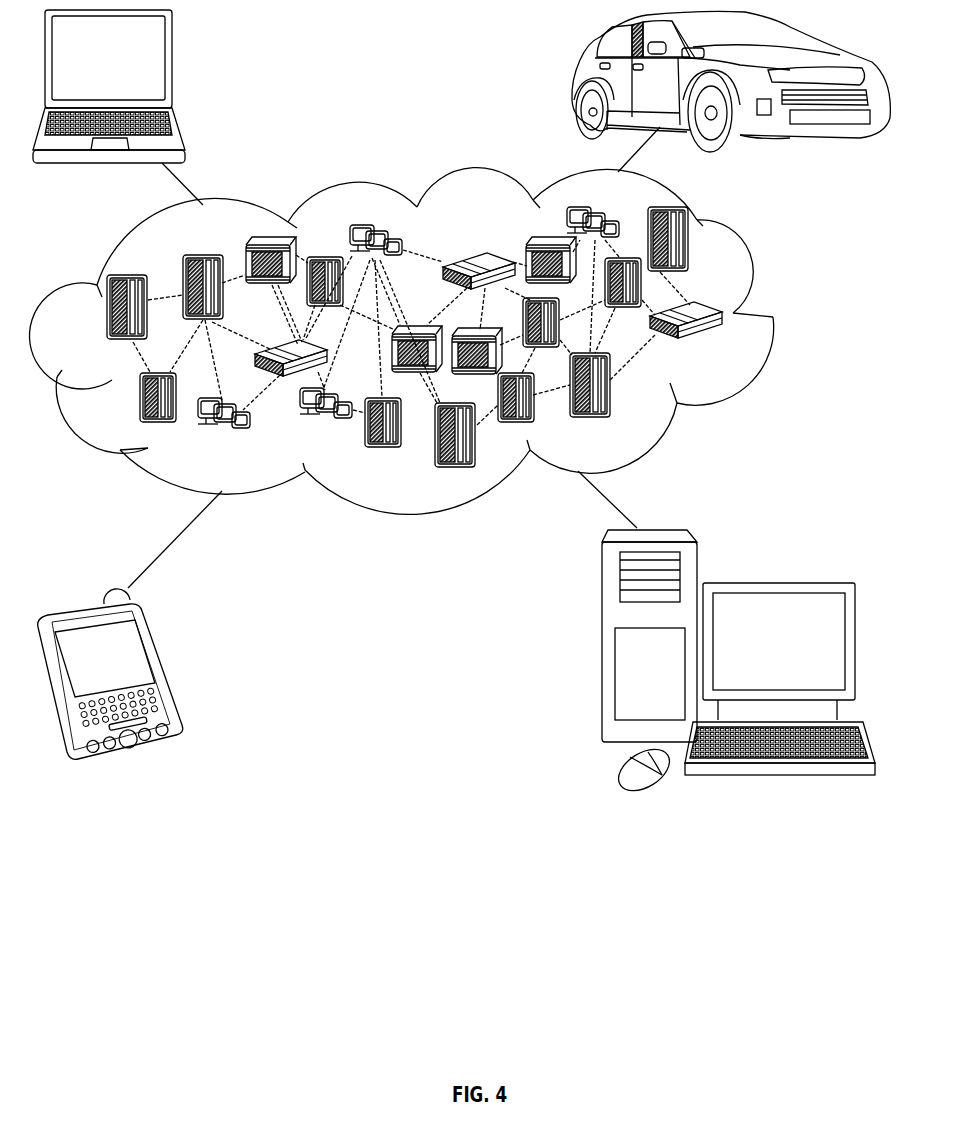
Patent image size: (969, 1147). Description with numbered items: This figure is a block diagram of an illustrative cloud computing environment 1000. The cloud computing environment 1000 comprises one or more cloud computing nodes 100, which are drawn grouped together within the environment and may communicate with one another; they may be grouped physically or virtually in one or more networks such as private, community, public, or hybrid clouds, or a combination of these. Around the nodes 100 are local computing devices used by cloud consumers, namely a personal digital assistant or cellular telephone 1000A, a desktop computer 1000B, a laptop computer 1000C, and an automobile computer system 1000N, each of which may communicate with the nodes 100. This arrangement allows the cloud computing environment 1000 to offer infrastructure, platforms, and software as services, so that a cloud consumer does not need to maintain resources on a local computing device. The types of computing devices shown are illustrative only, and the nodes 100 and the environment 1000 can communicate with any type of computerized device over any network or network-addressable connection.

The cloud computing environment 1000 is at (777, 317).
The cloud computing nodes 100 is at (728, 348).
The personal digital assistant (PDA) or cellular telephone 1000A is at (163, 668).
The desktop computer 1000B is at (787, 562).
The laptop computer 1000C is at (176, 66).
The automobile computer system 1000N is at (575, 80).